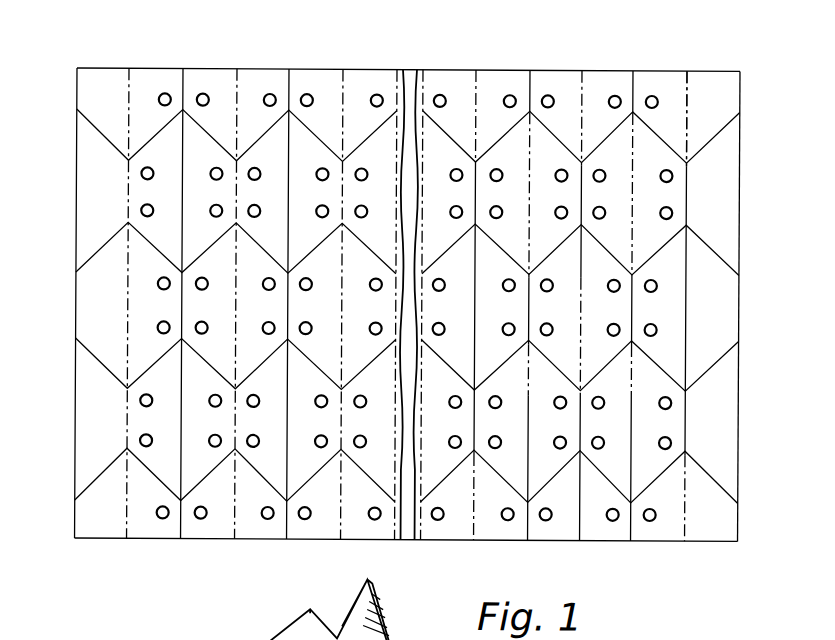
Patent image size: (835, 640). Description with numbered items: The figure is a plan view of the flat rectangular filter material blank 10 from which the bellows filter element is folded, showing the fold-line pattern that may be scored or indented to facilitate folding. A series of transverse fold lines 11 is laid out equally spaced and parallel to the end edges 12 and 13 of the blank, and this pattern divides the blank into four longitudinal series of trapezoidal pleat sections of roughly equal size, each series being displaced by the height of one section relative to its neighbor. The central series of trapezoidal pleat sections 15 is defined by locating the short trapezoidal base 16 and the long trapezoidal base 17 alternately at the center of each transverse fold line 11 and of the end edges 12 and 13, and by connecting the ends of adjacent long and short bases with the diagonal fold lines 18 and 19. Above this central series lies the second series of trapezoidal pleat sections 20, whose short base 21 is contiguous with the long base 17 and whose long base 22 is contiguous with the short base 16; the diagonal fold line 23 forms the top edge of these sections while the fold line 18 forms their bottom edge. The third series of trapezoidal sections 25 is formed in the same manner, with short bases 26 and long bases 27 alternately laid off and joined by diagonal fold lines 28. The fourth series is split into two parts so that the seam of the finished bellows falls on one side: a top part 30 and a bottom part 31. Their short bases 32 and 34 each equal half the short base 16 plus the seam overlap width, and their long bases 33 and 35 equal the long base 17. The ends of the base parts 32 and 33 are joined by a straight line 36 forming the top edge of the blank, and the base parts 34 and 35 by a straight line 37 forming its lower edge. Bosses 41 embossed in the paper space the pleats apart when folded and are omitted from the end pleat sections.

The blank 10 is at (393, 545).
The transverse fold lines 11 is at (683, 88).
The end edge 12 is at (742, 246).
The end edge 13 is at (77, 178).
The central series of trapezoidal pleat sections 15 is at (188, 265).
The short trapezoidal base 16 is at (77, 303).
The long trapezoidal base 17 is at (480, 322).
The diagonal fold line 18 is at (293, 268).
The diagonal fold line 19 is at (135, 372).
The second series of trapezoidal pleat sections 20 is at (118, 153).
The short base 21 is at (580, 200).
The long base 22 is at (637, 185).
The diagonal fold line 23 is at (323, 135).
The third series of trapezoidal sections 25 is at (118, 487).
The short base 26 is at (580, 422).
The long base 27 is at (350, 393).
The diagonal fold line 28 is at (300, 478).
The top part of fourth pleat section 30 is at (197, 78).
The bottom part of fourth pleat section 31 is at (168, 530).
The short base 32 is at (443, 92).
The long base 33 is at (235, 88).
The short base 34 is at (742, 503).
The long base 35 is at (478, 527).
The straight line 36 is at (341, 68).
The straight line 37 is at (120, 540).
The bosses 41 is at (307, 93).